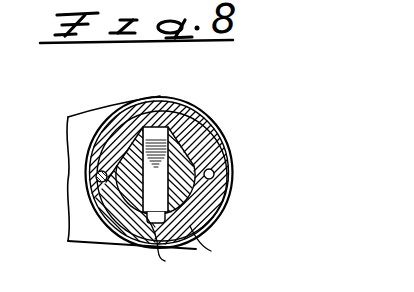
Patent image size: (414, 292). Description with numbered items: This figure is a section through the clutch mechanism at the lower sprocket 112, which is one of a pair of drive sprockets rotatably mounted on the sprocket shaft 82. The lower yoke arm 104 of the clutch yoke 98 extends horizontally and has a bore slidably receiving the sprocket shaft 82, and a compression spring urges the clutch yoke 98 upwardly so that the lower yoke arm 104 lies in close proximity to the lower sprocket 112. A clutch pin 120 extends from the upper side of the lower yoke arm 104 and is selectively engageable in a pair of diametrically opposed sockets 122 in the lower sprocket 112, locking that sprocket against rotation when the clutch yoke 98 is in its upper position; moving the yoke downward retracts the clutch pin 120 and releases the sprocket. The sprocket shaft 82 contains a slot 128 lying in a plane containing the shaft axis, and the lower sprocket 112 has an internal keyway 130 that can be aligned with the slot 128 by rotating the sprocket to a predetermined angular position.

The lower yoke arm 104 is at (113, 108).
The slot 128 is at (161, 146).
The sockets 122 is at (96, 177).
The clutch pin 120 is at (96, 184).
The clutch yoke 98 is at (86, 232).
The lower sprocket 112 is at (205, 218).
The sprocket shaft 82 is at (211, 245).
The keyways 130 is at (171, 244).